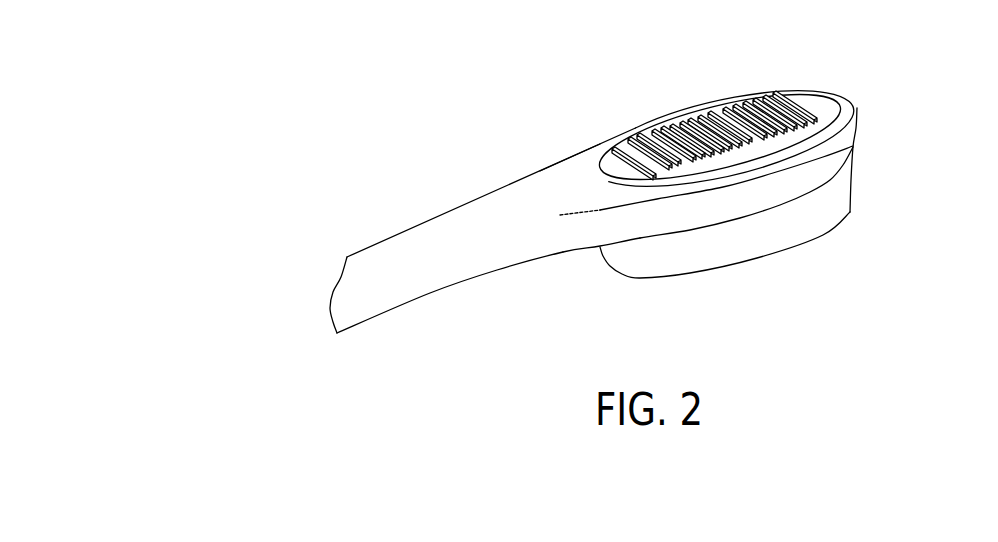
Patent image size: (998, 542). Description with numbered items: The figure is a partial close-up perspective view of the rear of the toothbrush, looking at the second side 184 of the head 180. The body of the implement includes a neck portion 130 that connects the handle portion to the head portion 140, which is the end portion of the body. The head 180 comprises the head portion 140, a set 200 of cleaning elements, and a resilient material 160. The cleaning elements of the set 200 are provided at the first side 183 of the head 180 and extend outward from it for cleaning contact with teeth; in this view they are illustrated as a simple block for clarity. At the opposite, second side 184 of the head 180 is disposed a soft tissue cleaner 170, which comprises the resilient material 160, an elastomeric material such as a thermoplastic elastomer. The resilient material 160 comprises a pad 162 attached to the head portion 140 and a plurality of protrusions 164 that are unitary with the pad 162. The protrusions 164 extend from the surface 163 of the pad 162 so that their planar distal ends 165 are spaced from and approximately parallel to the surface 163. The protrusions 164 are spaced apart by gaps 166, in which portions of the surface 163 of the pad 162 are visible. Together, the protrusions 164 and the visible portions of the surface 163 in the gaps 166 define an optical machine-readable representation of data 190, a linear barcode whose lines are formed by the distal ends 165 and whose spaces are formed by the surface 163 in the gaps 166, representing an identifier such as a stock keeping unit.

The neck portion 130 is at (407, 247).
The head portion 140 is at (623, 232).
The resilient material 160 is at (728, 96).
The pad 162 is at (822, 107).
The surface 163 is at (790, 142).
The protrusions 164 is at (653, 140).
The distal ends 165 is at (665, 132).
The gaps 166 is at (643, 137).
The soft tissue cleaner 170 is at (772, 70).
The head 180 is at (882, 95).
The first side 183 is at (803, 197).
The second side 184 is at (573, 158).
The optical machine-readable representation of data 190 is at (750, 67).
The set of cleaning elements 200 is at (800, 223).